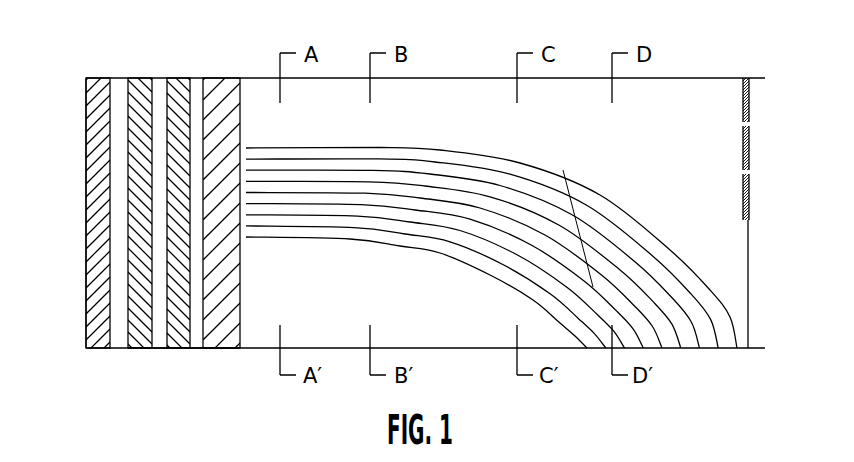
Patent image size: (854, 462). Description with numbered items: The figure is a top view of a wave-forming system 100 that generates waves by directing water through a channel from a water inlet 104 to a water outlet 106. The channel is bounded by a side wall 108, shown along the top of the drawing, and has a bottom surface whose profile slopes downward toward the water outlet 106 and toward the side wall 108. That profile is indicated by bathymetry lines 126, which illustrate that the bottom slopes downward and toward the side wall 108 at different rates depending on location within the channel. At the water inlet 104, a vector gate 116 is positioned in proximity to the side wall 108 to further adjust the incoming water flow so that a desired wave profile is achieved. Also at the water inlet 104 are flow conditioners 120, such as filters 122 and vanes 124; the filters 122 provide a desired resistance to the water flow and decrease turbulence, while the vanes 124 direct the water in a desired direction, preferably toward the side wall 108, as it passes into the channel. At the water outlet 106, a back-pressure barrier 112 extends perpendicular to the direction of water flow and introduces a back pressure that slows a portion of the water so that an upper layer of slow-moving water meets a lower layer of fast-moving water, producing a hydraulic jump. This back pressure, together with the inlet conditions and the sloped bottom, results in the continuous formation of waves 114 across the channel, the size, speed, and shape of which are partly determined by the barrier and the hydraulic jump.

The wave-forming system 100 is at (659, 61).
The water inlet 104 is at (152, 216).
The water outlet 106 is at (748, 257).
The side wall 108 is at (433, 78).
The back-pressure barrier 112 is at (750, 100).
The waves 114 is at (580, 228).
The vector gate 116 is at (107, 108).
The flow conditioner 120 is at (213, 350).
The filter 122 is at (219, 78).
The vane 124 is at (185, 80).
The bathymetry lines 126 is at (508, 182).